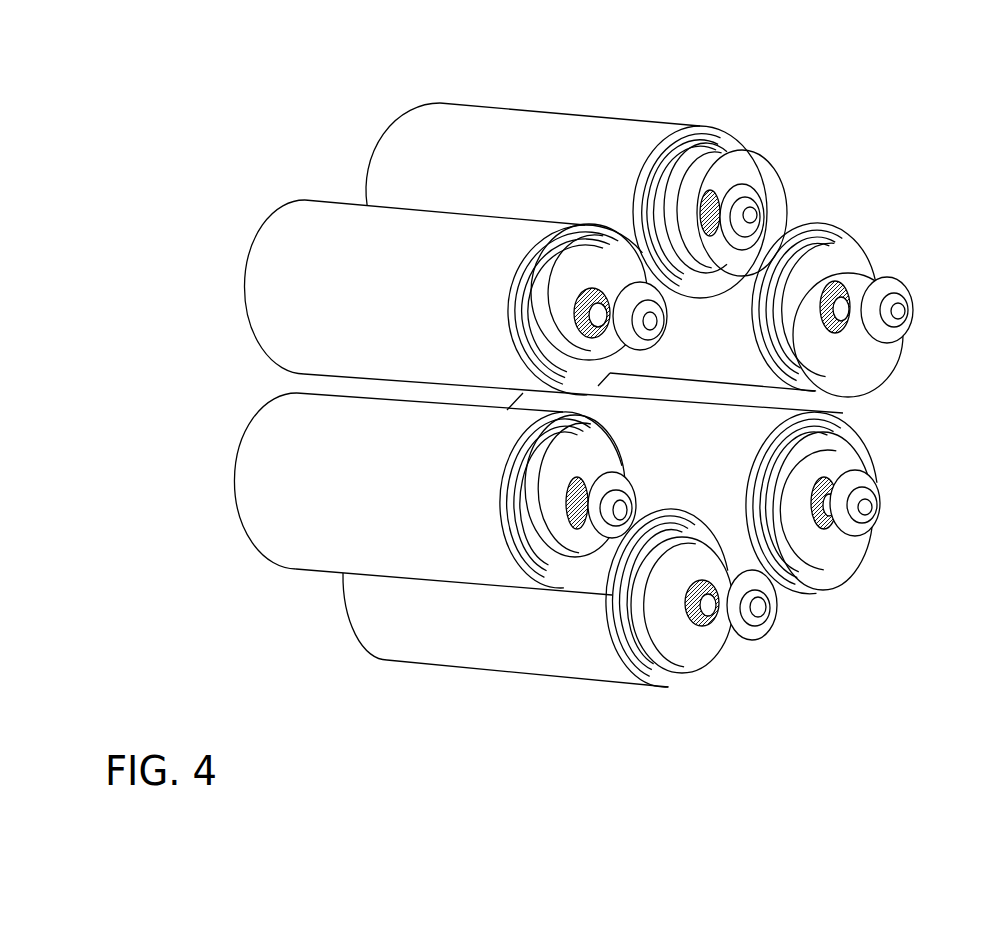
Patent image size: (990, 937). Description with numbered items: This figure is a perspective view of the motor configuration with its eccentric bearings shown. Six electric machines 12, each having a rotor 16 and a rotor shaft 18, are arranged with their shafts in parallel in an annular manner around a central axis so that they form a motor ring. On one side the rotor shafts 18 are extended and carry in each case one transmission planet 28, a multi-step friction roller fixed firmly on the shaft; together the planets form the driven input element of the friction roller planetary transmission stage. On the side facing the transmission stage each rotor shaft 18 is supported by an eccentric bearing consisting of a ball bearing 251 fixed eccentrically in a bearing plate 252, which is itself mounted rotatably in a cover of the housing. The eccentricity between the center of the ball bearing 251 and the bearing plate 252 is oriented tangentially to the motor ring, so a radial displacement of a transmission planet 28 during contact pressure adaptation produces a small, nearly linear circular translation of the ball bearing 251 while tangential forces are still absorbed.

The electric machine 12 is at (398, 160).
The rotor 16 is at (538, 300).
The rotor shaft 18 is at (711, 399).
The transmission planet 28 is at (646, 305).
The ball bearing 251 is at (588, 295).
The bearing plate 252 is at (562, 282).